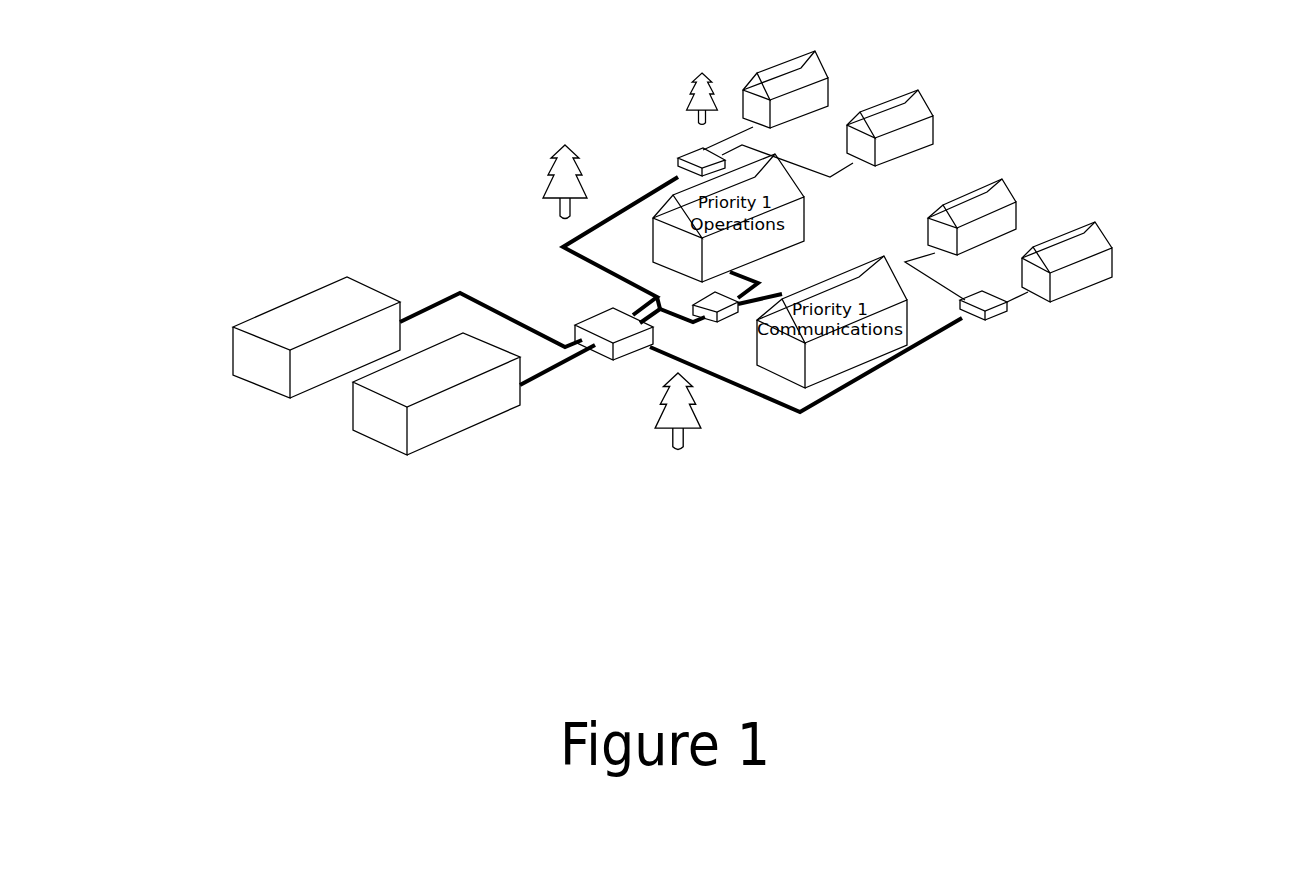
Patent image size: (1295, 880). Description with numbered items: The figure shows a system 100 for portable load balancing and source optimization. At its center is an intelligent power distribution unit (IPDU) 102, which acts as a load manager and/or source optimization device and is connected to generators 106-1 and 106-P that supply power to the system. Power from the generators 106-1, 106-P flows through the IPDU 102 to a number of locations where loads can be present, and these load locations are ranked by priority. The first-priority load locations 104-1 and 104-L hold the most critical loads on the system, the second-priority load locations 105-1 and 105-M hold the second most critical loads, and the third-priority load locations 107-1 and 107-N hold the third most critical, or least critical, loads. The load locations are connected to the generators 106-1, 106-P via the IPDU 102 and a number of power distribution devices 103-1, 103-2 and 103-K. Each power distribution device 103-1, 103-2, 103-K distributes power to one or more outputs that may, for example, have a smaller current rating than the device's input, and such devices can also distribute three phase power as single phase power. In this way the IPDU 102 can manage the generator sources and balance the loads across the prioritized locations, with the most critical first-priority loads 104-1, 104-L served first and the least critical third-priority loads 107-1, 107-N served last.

The system 100 is at (277, 170).
The intelligent power distribution unit (IPDU) 102 is at (628, 352).
The power distribution device 103-1 is at (680, 158).
The power distribution device 103-2 is at (725, 325).
The power distribution device 103-K is at (1002, 320).
The Priority 1 load location 104-1 is at (672, 207).
The Priority 1 load location 104-L is at (855, 365).
The Priority 2 load location 105-1 is at (832, 85).
The Priority 2 load location 105-M is at (927, 127).
The generator 106-1 is at (270, 390).
The generator 106-P is at (393, 447).
The Priority 3 load location 107-1 is at (1008, 227).
The Priority 3 load location 107-N is at (1105, 267).